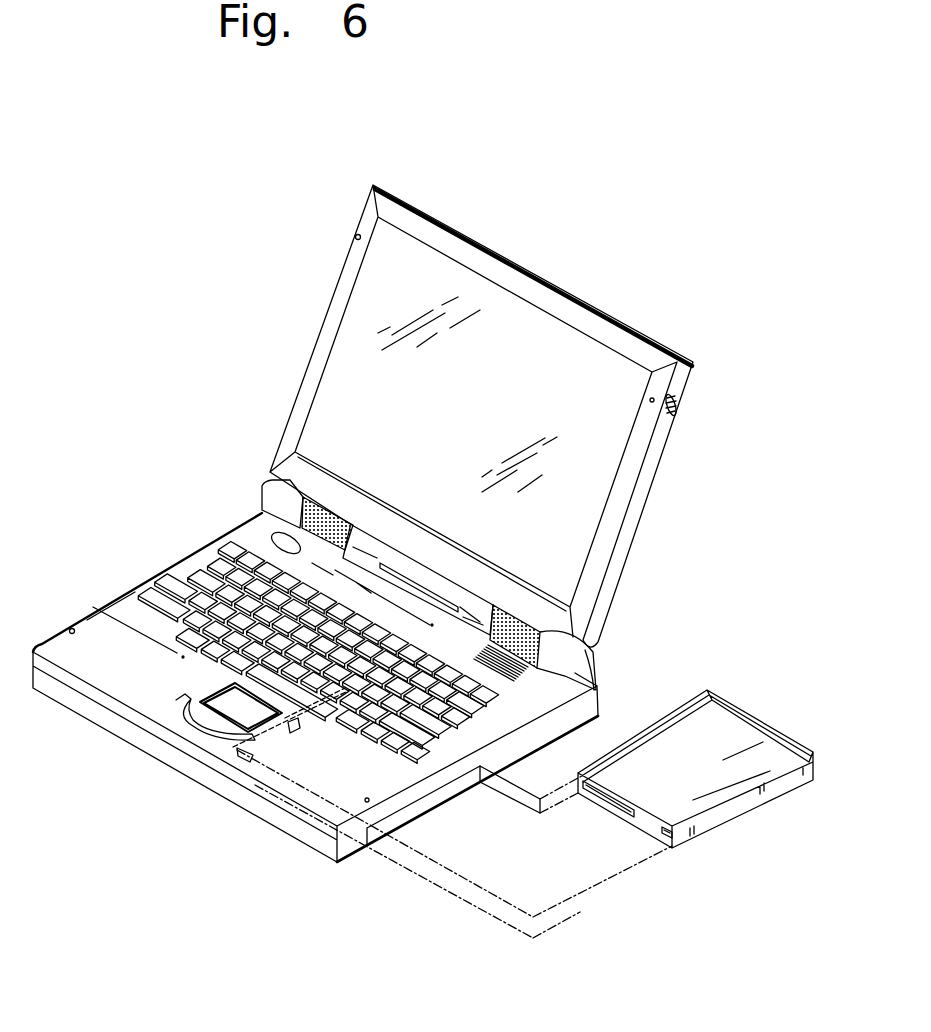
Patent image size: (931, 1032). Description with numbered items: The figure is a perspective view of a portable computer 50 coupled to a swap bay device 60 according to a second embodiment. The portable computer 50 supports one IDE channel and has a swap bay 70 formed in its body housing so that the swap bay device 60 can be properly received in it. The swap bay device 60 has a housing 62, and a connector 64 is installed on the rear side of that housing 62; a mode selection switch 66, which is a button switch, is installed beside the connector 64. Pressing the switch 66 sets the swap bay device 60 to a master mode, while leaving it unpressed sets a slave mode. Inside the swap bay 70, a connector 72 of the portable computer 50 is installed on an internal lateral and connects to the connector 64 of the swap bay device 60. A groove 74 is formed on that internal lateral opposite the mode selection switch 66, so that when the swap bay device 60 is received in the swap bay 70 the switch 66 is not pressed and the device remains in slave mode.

The portable computer 50 is at (272, 362).
The swap bay device 60 is at (682, 781).
The housing 62 is at (733, 812).
The connector 64 is at (600, 805).
The mode selection switch 66 is at (666, 840).
The swap bay 70 is at (404, 816).
The connector 72 is at (300, 727).
The groove 74 is at (253, 760).